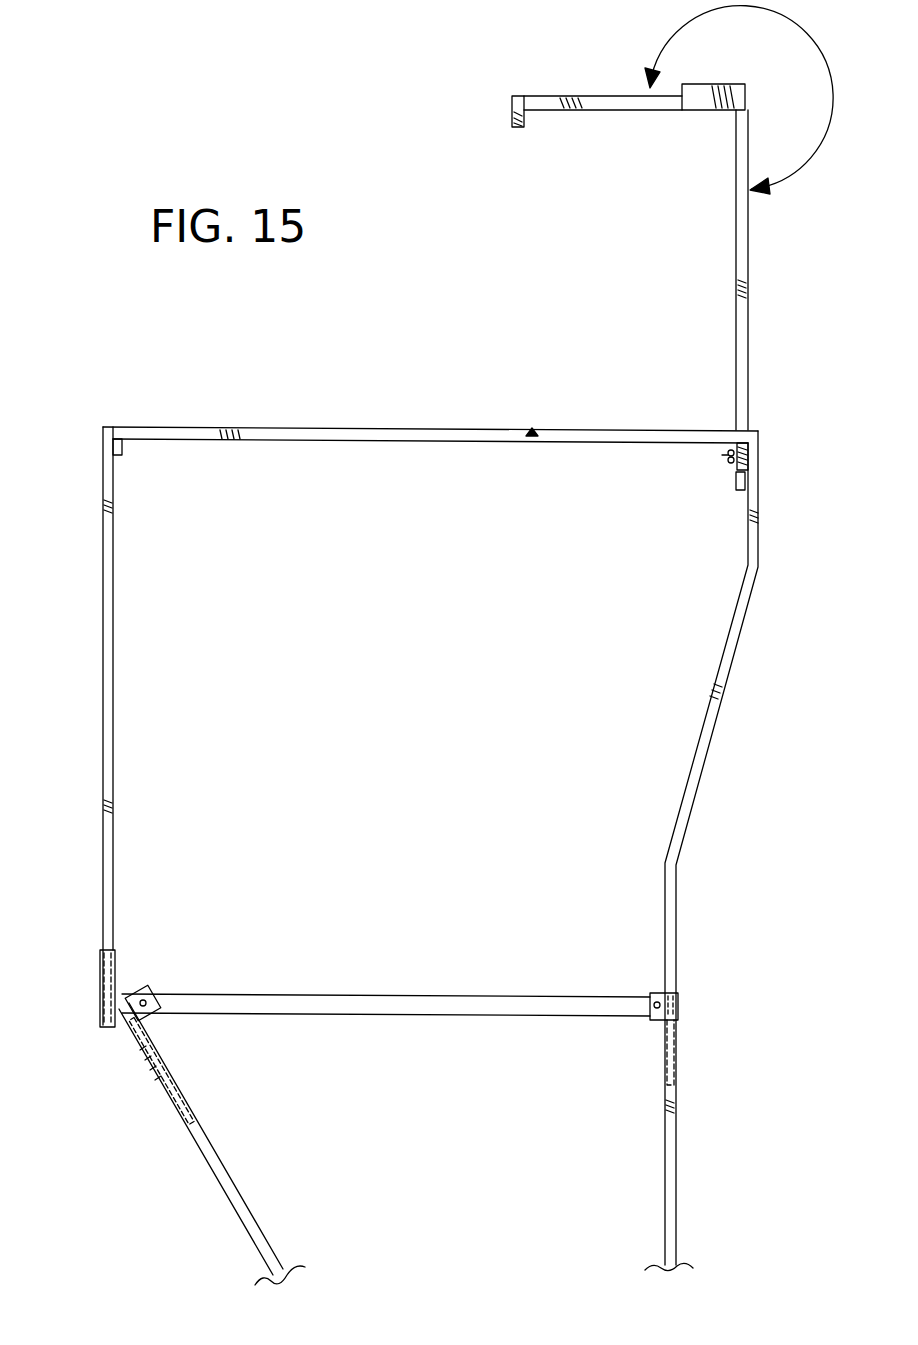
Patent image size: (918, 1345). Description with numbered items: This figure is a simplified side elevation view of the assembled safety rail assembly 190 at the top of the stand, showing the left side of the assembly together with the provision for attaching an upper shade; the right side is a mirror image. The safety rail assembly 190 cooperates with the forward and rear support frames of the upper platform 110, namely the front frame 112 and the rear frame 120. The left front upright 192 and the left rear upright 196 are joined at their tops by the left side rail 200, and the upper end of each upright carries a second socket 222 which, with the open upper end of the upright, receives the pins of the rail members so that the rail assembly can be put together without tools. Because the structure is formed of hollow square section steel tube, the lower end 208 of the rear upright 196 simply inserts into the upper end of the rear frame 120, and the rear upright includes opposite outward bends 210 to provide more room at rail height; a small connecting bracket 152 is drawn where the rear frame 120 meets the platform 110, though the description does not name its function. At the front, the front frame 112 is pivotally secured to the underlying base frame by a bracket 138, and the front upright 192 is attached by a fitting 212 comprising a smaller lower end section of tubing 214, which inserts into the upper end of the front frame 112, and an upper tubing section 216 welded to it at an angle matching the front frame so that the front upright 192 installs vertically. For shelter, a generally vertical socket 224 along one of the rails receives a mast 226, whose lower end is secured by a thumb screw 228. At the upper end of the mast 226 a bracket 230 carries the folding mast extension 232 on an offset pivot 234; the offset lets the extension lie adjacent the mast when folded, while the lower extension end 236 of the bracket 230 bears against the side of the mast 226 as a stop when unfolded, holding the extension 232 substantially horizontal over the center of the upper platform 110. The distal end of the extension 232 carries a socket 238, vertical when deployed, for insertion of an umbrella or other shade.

The safety rail assembly 190 is at (262, 355).
The folding mast extension 232 is at (604, 60).
The socket 238 is at (512, 118).
The bracket 230 is at (700, 84).
The offset pivot 234 is at (738, 94).
The lower extension end 236 is at (732, 112).
The mast 226 is at (736, 300).
The left side rail 200 is at (446, 444).
The left front upright 192 is at (114, 740).
The socket 222 is at (124, 450).
The thumb screw 228 is at (726, 458).
The vertical socket 224 is at (736, 480).
The left rear upright 196 is at (708, 726).
The outward bend 210 is at (756, 566).
The rear frame 120 is at (678, 1200).
The lower end 208 is at (682, 1046).
The bracket 152 is at (654, 994).
The upper platform 110 is at (394, 994).
The upper tubing section 216 is at (100, 984).
The fitting 212 is at (118, 994).
The bracket 138 is at (148, 988).
The front frame 112 is at (238, 1216).
The lower end section of tubing 214 is at (170, 1076).